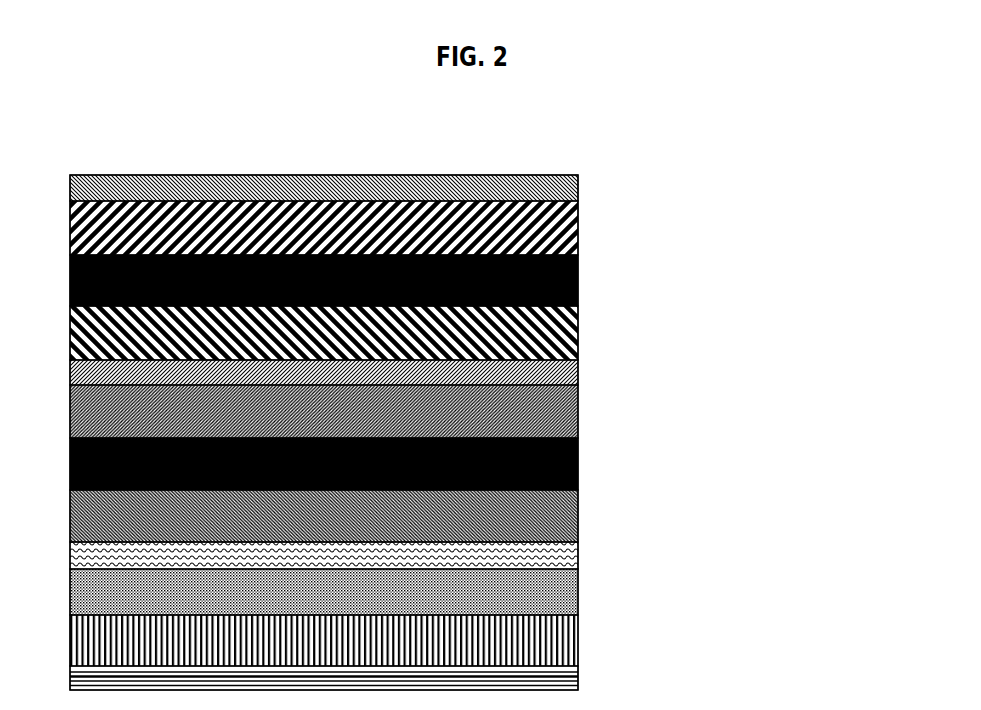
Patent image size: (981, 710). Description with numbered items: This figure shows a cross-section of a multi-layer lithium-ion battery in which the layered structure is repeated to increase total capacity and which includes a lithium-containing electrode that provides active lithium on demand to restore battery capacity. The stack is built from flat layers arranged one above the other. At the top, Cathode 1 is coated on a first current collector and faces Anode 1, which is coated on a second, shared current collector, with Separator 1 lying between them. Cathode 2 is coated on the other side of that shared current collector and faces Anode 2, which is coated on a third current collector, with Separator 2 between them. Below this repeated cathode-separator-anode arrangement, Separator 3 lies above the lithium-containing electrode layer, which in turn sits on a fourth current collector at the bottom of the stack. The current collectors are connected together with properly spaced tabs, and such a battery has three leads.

The cathode Cathode 1 is at (570, 222).
The separator Separator 1 is at (570, 280).
The anode Anode 1 is at (570, 316).
The cathode Cathode 2 is at (570, 405).
The separator Separator 2 is at (570, 468).
The anode Anode 2 is at (570, 510).
The separator Separator 3 is at (570, 602).